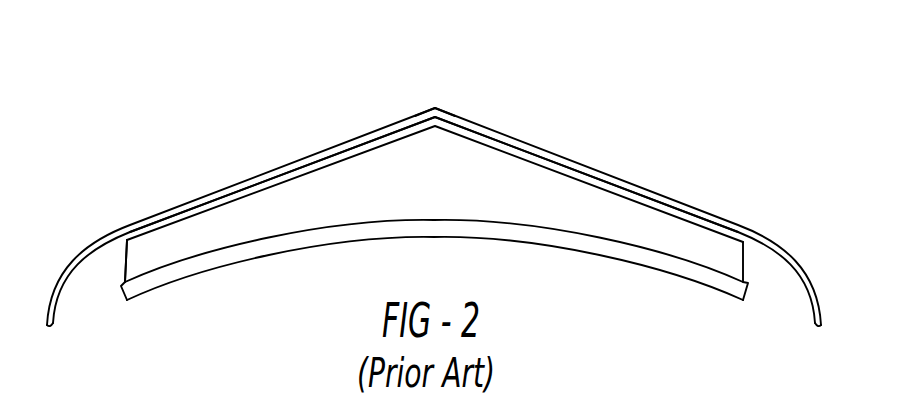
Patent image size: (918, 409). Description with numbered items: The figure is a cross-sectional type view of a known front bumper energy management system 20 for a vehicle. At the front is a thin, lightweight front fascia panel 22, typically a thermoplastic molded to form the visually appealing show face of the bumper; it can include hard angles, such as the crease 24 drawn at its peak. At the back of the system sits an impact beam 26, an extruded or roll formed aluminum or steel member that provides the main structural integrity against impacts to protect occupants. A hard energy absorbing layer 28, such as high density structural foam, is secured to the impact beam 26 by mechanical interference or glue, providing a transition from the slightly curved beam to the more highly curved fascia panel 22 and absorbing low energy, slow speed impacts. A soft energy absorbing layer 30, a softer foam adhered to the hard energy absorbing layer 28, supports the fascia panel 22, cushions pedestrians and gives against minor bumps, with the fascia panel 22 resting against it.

The energy management system 20 is at (359, 52).
The front fascia panel 22 is at (298, 160).
The crease 24 is at (435, 108).
The impact beam 26 is at (603, 243).
The hard energy absorbing layer 28 is at (173, 250).
The soft energy absorbing layer 30 is at (228, 201).